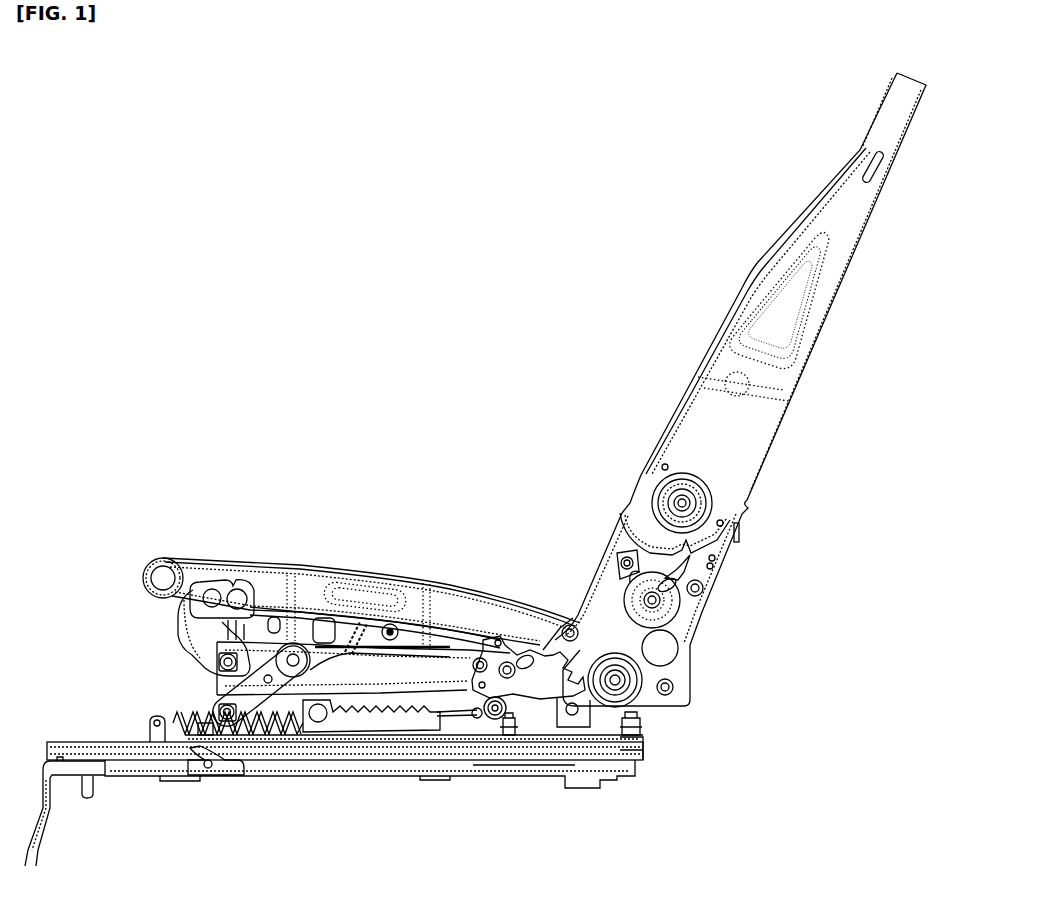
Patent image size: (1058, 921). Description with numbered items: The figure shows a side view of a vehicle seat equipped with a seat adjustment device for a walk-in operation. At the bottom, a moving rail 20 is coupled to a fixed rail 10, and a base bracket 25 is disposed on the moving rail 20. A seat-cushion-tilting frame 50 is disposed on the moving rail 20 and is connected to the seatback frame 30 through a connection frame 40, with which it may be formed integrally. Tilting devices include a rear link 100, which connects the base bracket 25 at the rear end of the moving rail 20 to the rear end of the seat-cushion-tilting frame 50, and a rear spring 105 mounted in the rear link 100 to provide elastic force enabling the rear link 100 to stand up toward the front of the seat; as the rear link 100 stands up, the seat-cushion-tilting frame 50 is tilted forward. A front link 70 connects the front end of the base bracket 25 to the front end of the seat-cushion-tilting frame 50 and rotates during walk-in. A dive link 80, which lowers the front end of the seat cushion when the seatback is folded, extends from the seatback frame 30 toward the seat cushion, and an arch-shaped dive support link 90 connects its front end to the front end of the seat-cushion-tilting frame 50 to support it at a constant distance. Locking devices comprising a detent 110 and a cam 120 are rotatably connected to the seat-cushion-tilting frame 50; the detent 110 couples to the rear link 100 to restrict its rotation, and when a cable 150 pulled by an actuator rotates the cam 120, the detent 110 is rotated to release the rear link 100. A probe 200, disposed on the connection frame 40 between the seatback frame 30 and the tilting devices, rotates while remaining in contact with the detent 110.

The fixed rail 10 is at (593, 778).
The moving rail 20 is at (645, 753).
The base bracket 25 is at (633, 725).
The seatback frame 30 is at (632, 482).
The connection frame 40 is at (707, 596).
The seat-cushion-tilting frame 50 is at (581, 599).
The front link 70 is at (210, 672).
The dive link 80 is at (152, 560).
The dive support link 90 is at (193, 630).
The rear link 100 is at (537, 715).
The rear spring 105 is at (645, 677).
The detent 110 is at (573, 622).
The cam 120 is at (472, 700).
The cable 150 is at (443, 640).
The probe 200 is at (670, 622).